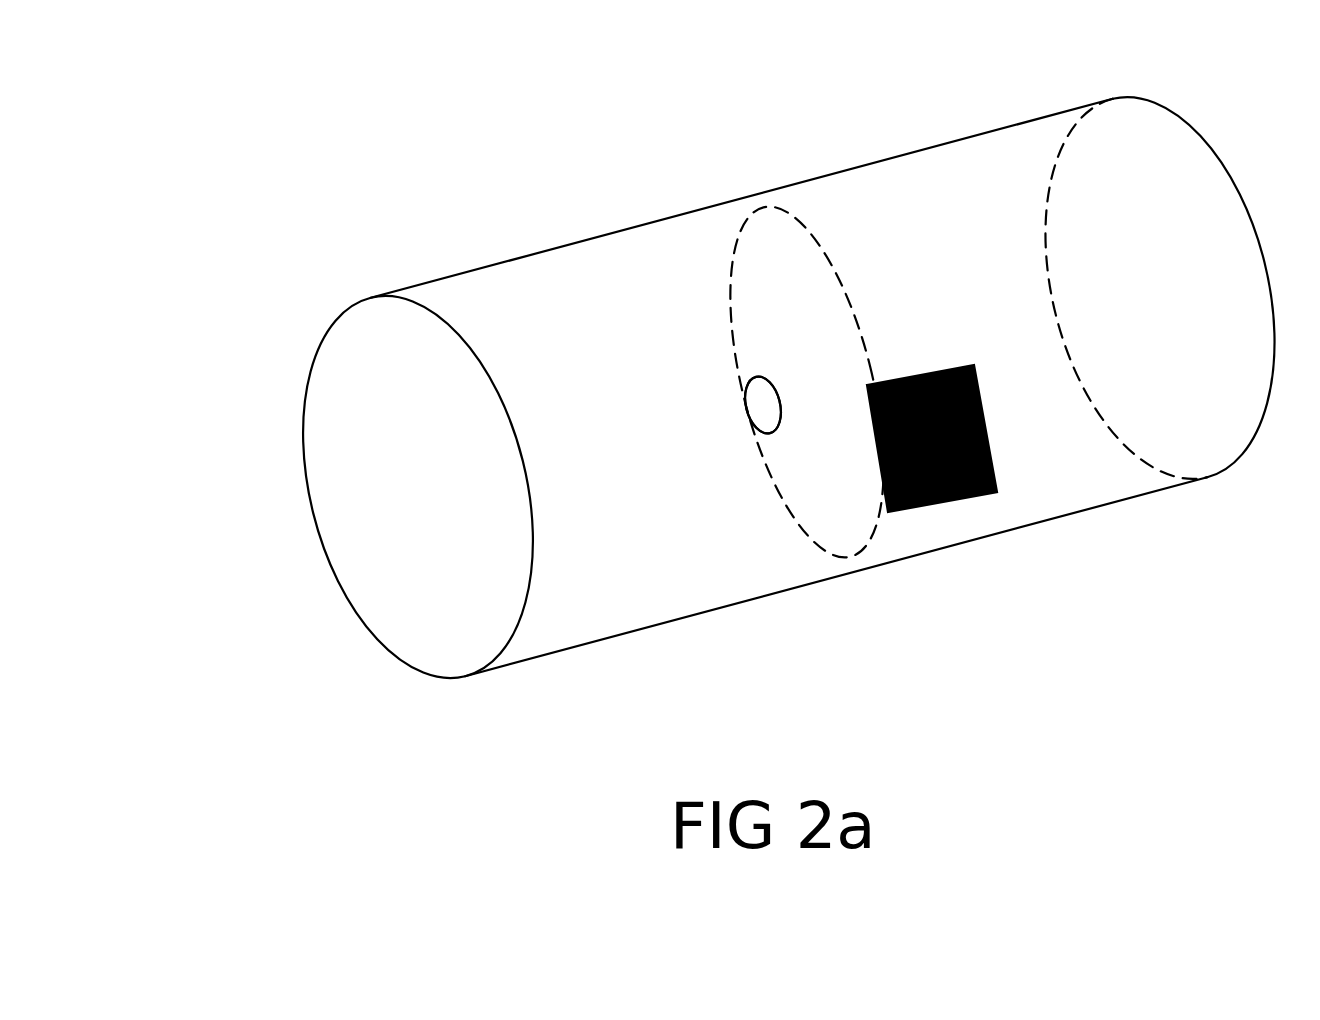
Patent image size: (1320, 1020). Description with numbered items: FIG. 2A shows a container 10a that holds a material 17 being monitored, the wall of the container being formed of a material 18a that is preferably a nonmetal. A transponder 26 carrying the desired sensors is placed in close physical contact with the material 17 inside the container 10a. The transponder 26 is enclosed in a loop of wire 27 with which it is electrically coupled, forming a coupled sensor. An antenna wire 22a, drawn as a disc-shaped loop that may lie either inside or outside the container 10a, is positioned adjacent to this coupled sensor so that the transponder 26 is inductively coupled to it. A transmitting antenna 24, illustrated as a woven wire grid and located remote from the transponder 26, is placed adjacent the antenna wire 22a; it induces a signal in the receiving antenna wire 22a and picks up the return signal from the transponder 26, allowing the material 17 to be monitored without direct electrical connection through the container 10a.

The container 10a is at (530, 252).
The material stored in the container 17 is at (660, 598).
The material of the container 18a is at (323, 547).
The antenna wire 22a is at (797, 210).
The loop of wire 27 is at (780, 398).
The transponder 26 is at (750, 420).
The transmitting antenna 24 is at (983, 495).